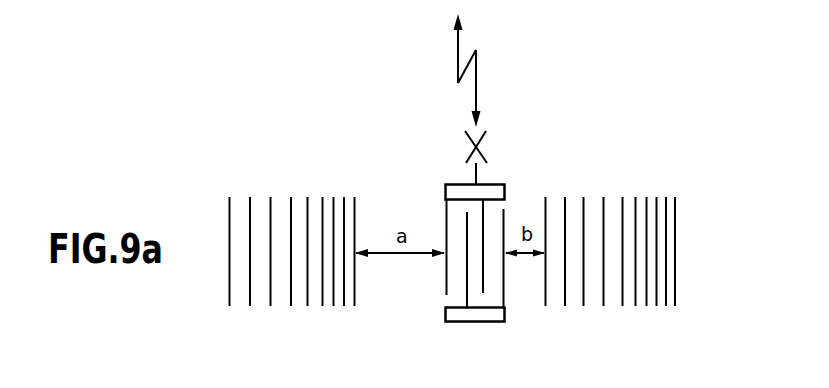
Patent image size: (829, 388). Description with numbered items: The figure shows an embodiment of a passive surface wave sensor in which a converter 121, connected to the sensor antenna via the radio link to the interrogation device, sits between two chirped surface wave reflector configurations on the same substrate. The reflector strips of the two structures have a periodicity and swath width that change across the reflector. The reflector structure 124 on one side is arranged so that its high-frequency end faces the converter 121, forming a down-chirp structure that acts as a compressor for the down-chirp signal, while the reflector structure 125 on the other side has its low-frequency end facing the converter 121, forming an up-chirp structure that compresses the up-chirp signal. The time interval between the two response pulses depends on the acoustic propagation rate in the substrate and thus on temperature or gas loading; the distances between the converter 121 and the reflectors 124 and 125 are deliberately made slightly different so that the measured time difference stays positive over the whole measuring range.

The converter 121 is at (445, 311).
The reflector structure 124 is at (318, 312).
The reflector structure 125 is at (633, 312).